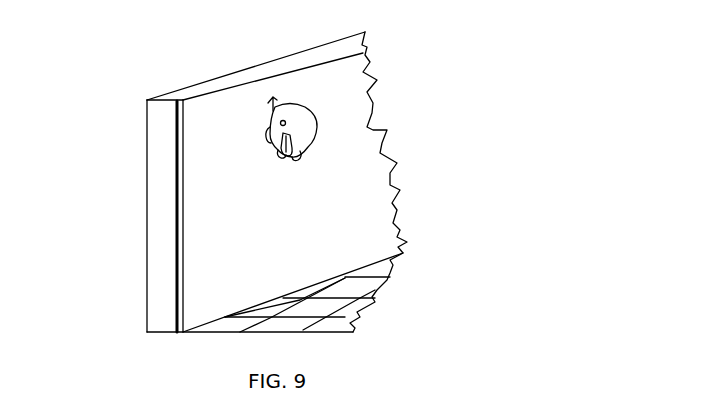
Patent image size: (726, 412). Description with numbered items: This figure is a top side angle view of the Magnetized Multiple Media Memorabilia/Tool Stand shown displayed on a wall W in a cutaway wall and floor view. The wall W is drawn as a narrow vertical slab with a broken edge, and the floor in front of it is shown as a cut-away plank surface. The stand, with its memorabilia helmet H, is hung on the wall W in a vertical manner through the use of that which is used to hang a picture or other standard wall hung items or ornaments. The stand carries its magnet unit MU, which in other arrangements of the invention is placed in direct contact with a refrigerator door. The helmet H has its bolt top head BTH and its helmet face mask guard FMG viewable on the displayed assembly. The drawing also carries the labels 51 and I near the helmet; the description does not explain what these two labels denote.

The wall W is at (165, 210).
The magnet unit MU is at (267, 135).
The attachment device 51 is at (291, 131).
The indicator I is at (280, 101).
The bolt top head BTH is at (320, 121).
The helmet H is at (317, 140).
The helmet face mask guard FMG is at (288, 160).